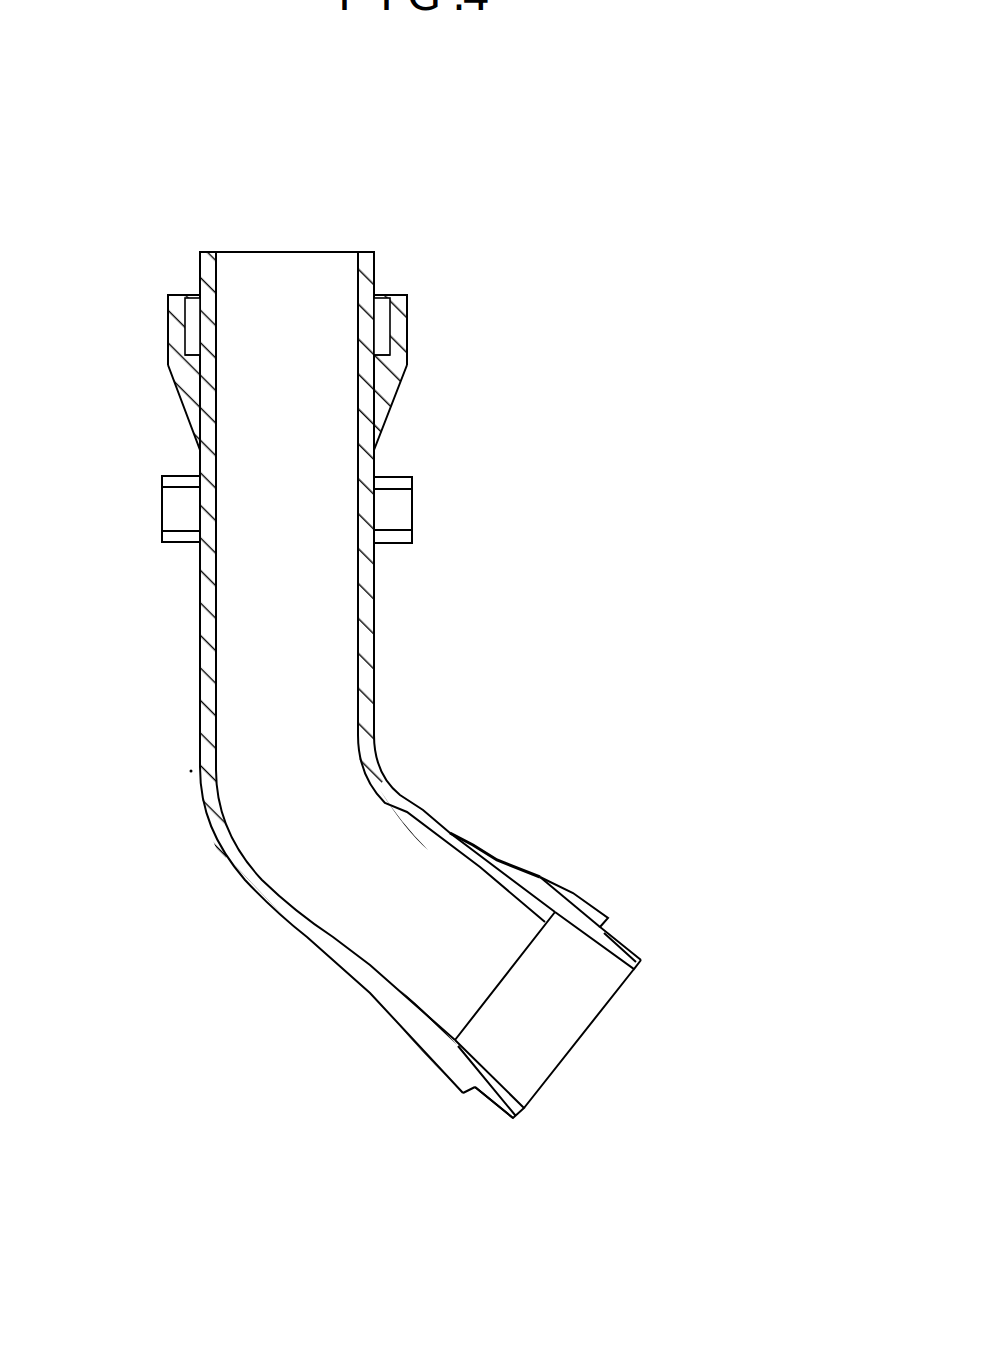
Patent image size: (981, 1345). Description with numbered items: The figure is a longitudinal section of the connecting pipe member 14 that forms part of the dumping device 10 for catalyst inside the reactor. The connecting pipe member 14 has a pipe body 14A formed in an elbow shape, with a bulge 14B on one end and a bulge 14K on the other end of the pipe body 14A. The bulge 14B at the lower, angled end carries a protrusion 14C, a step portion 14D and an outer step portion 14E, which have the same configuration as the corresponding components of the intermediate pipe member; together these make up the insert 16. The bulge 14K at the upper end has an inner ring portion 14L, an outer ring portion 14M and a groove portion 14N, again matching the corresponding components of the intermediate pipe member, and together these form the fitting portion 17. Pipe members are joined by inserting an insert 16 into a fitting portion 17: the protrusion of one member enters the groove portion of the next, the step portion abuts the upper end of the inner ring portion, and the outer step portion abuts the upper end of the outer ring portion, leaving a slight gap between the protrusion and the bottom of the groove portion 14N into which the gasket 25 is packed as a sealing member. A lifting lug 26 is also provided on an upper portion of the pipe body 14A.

The dumping device 10 is at (363, 190).
The connecting pipe member 14 is at (401, 787).
The pipe body 14A is at (368, 685).
The bulge 14B is at (574, 893).
The protrusion 14C is at (520, 1118).
The step portion 14D is at (462, 1043).
The outer step portion 14E is at (472, 1098).
The bulge 14K is at (383, 403).
The inner ring portion 14L is at (368, 251).
The outer ring portion 14M is at (402, 308).
The groove portion 14N is at (384, 352).
The gasket 25 is at (376, 382).
The insert 16 is at (672, 1227).
The fitting portion 17 is at (580, 178).
The lifting lug 26 is at (399, 512).